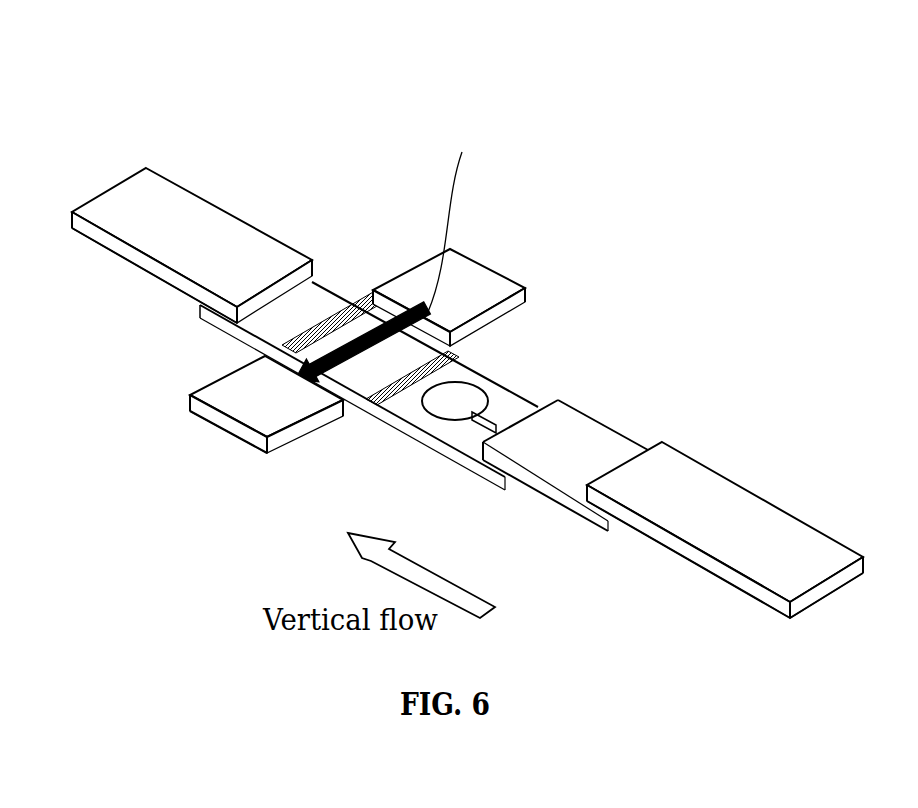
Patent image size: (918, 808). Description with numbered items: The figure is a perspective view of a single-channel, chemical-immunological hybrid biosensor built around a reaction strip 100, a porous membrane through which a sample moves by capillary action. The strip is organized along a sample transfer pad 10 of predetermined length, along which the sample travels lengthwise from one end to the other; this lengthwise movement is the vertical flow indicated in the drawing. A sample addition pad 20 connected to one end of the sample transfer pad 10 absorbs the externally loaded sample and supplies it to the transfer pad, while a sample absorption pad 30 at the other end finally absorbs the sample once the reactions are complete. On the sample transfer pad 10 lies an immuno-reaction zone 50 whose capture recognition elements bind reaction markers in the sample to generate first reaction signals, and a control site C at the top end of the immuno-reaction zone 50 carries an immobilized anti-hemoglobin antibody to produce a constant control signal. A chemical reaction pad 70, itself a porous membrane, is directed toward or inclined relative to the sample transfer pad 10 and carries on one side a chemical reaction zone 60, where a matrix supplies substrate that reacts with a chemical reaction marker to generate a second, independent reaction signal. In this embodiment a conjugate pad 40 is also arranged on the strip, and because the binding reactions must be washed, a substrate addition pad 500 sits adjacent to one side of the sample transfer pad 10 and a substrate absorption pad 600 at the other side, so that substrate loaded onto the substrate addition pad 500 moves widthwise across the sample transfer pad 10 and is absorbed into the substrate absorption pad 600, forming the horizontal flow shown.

The reaction strip 100 is at (446, 319).
The sample transfer pad 10 is at (322, 298).
The sample addition pad 20 is at (745, 517).
The sample absorption pad 30 is at (220, 221).
The conjugate pad 40 is at (587, 438).
The immuno-reaction zone 50 is at (433, 375).
The chemical reaction zone 60 is at (447, 411).
The chemical reaction pad 70 is at (500, 419).
The substrate addition pad 500 is at (480, 290).
The substrate absorption pad 600 is at (217, 395).
The control site C is at (293, 338).